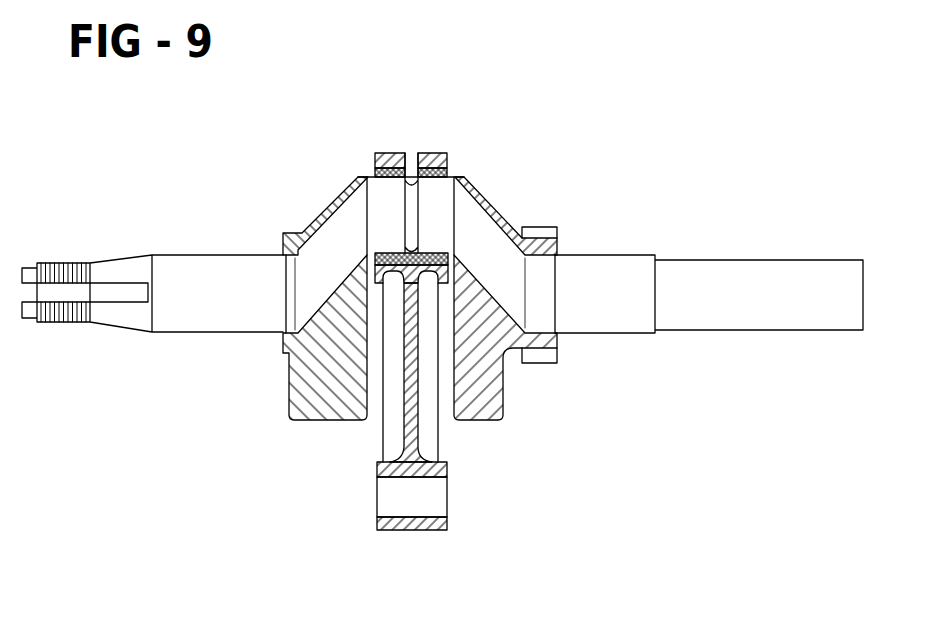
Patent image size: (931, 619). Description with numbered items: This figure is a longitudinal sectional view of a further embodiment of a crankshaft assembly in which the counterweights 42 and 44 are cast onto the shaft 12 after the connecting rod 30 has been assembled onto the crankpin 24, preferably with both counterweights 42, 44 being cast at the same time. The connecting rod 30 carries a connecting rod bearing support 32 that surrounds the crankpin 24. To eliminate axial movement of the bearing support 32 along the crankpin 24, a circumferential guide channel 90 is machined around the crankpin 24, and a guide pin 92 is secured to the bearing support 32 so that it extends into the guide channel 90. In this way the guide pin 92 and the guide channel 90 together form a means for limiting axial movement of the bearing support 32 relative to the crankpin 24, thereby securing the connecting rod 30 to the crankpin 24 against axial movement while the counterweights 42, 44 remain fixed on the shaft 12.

The shaft 12 is at (690, 257).
The crankpin 24 is at (437, 200).
The connecting rod 30 is at (400, 433).
The connecting rod bearing support 32 is at (430, 153).
The counterweight 42 is at (483, 397).
The counterweight 44 is at (310, 383).
The circumferential guide channel 90 is at (408, 207).
The guide pin 92 is at (413, 157).